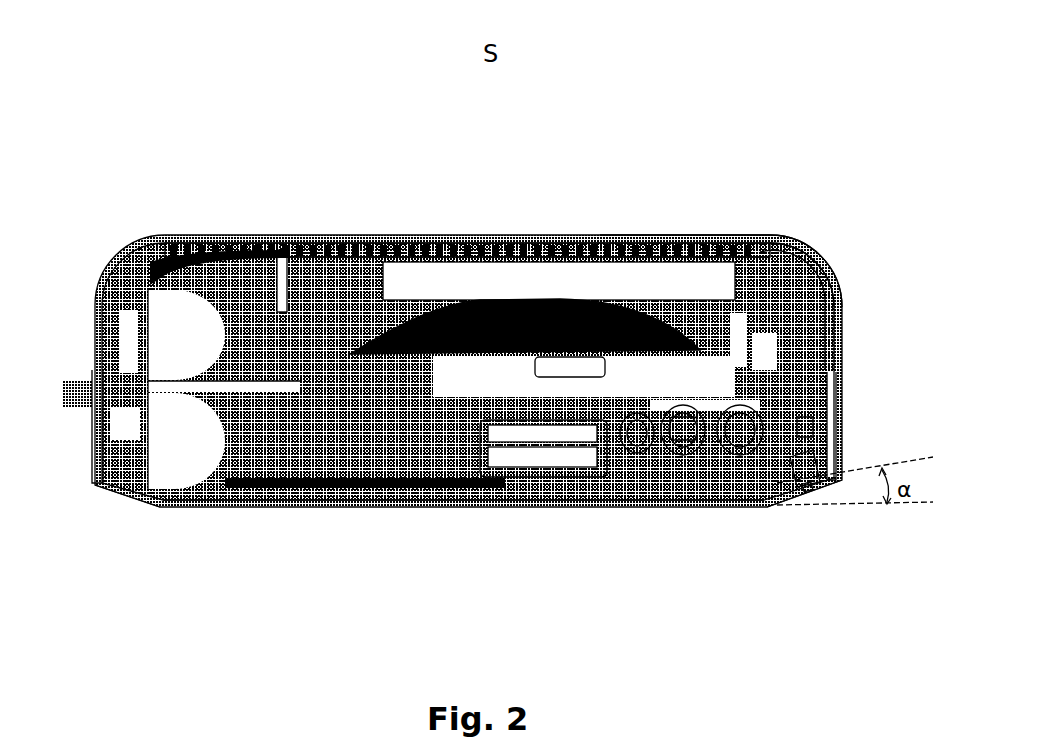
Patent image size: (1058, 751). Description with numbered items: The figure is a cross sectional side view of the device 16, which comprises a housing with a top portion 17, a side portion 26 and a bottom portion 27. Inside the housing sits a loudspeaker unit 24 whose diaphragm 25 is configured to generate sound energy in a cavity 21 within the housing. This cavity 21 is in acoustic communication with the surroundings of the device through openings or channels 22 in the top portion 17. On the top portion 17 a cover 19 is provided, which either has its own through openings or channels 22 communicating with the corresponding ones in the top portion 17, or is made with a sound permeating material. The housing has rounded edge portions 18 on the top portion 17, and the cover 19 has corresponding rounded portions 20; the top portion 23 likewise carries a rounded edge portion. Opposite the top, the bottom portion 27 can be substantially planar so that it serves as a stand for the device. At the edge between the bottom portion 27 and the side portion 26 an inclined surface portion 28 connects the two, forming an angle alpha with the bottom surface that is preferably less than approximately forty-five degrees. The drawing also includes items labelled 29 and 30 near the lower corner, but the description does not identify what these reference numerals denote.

The device 16 is at (333, 155).
The top portion 17 is at (797, 260).
The rounded edge portions 18 is at (820, 280).
The cover 19 is at (694, 235).
The rounded portions 20 is at (118, 260).
The cavity 21 is at (540, 275).
The openings or channels 22 is at (640, 244).
The top portion 23 is at (432, 236).
The loudspeaker unit 24 is at (497, 435).
The diaphragm 25 is at (473, 300).
The side portion 26 is at (839, 402).
The bottom portion 27 is at (593, 505).
The inclined surface portion 28 is at (118, 497).
The sensor 29 is at (806, 480).
The sensor contact 30 is at (811, 490).